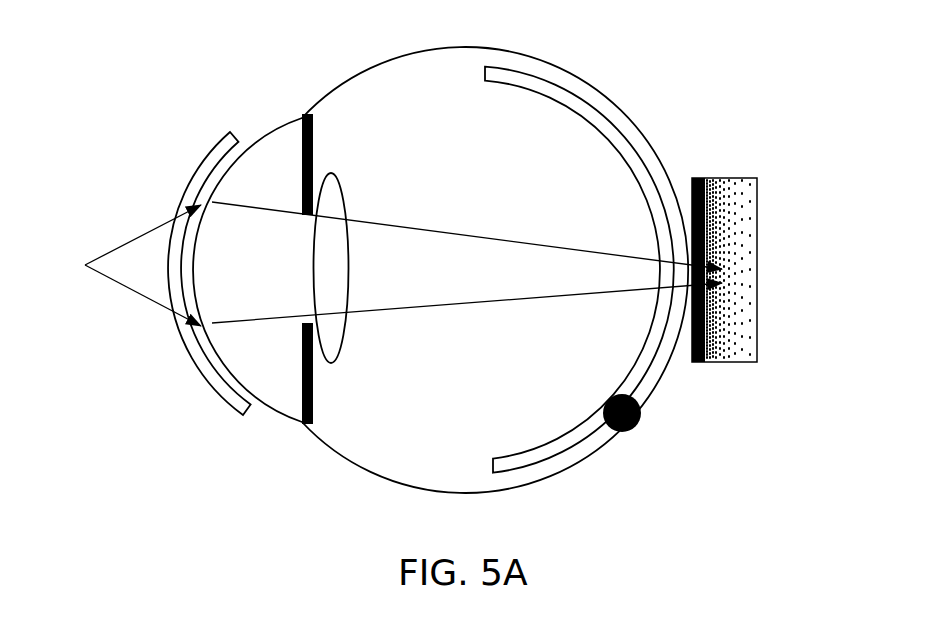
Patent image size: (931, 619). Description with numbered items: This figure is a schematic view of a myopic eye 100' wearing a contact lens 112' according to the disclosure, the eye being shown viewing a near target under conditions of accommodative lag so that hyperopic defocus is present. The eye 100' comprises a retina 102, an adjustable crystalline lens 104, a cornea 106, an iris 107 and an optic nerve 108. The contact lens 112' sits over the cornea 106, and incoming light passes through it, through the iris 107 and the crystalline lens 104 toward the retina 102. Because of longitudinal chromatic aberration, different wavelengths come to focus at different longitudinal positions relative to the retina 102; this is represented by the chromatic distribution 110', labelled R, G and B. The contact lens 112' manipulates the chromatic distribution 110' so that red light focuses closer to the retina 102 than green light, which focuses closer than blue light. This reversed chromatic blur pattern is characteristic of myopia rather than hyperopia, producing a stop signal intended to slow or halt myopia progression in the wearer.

The myopic eye 100' is at (438, 255).
The retina 102 is at (635, 165).
The adjustable crystalline lens 104 is at (342, 338).
The cornea 106 is at (233, 402).
The iris 107 is at (313, 148).
The optic nerve 108 is at (604, 400).
The chromatic distribution 110' is at (747, 243).
The contact lens 112' is at (159, 274).